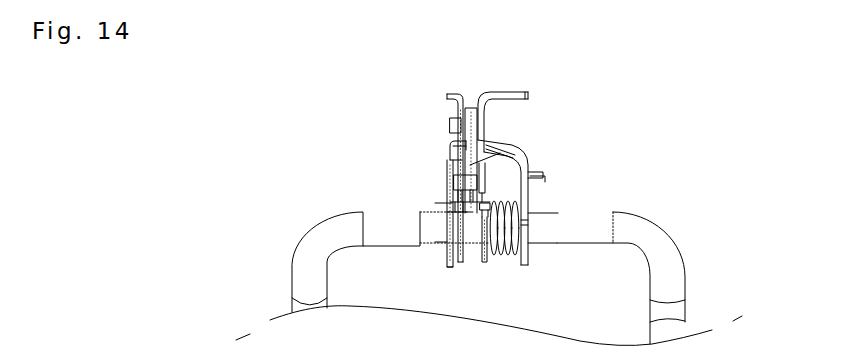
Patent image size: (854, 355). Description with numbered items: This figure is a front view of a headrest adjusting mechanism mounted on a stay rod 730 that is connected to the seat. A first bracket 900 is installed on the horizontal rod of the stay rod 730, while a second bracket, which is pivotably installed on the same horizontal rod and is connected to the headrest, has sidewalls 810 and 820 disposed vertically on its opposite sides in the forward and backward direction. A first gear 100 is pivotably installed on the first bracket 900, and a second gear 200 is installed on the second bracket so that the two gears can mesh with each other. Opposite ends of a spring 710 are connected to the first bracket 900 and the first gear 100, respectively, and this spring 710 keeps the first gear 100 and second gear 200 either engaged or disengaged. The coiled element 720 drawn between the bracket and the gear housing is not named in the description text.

The first gear 100 is at (521, 167).
The second gear 200 is at (478, 118).
The spring 710 is at (470, 178).
The coil spring 720 is at (511, 257).
The stay rod 730 is at (603, 216).
The sidewall 810 is at (528, 203).
The sidewall 820 is at (455, 150).
The first bracket 900 is at (486, 262).